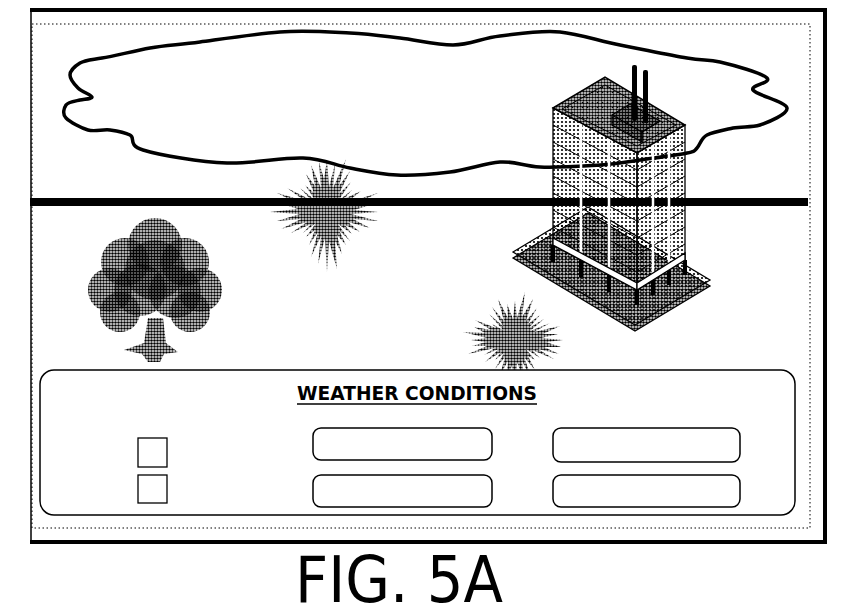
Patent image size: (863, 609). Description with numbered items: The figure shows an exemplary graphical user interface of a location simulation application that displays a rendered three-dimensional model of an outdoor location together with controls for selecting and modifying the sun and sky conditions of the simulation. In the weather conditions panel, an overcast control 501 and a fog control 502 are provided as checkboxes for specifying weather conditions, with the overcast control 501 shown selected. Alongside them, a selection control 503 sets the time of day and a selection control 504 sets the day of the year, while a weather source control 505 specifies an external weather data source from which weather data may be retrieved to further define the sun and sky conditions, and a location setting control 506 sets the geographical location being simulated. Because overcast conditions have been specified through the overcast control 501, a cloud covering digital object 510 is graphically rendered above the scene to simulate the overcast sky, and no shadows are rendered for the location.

The overcast control 501 is at (142, 488).
The fog control 502 is at (148, 442).
The selection control for setting a time of day 503 is at (468, 456).
The selection control for setting a day of the year 504 is at (468, 504).
The weather source control 505 is at (726, 446).
The location setting control 506 is at (722, 498).
The cloud covering digital object 510 is at (105, 84).